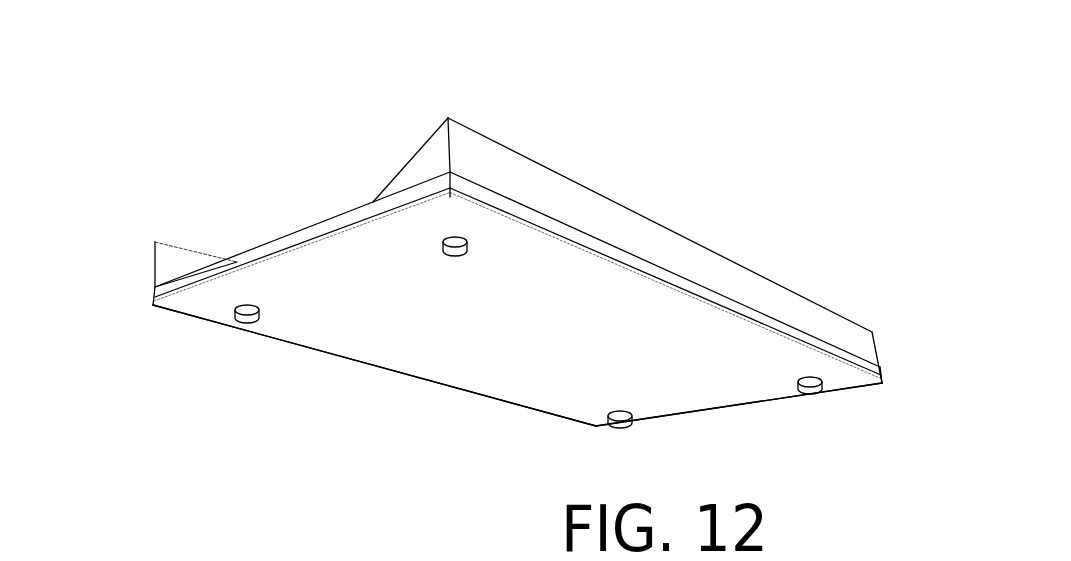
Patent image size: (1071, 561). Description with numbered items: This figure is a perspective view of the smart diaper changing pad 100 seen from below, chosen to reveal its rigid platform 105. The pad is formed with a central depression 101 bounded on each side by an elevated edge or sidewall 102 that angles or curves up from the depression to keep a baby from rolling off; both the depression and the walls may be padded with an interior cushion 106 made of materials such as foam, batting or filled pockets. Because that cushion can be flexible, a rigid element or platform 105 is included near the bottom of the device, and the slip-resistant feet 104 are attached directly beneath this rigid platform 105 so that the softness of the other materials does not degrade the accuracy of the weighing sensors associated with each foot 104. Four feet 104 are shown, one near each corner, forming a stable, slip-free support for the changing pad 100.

The smart diaper changing pad 100 is at (568, 163).
The central depression 101 is at (297, 228).
The elevated edges or sidewalls 102 is at (170, 263).
The slip-resistant feet 104 is at (462, 240).
The rigid platform 105 is at (720, 357).
The interior cushion 106 is at (248, 258).